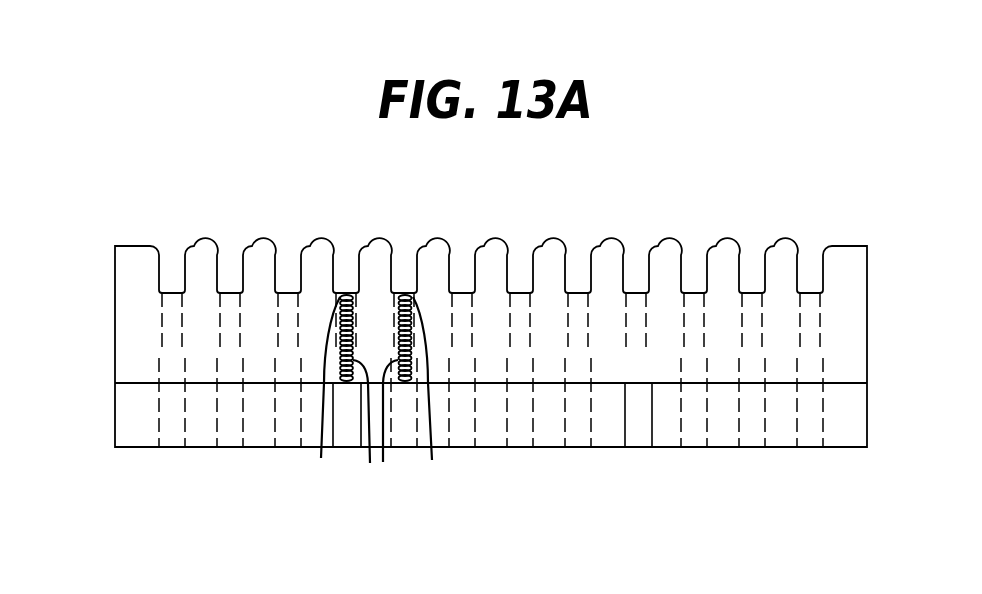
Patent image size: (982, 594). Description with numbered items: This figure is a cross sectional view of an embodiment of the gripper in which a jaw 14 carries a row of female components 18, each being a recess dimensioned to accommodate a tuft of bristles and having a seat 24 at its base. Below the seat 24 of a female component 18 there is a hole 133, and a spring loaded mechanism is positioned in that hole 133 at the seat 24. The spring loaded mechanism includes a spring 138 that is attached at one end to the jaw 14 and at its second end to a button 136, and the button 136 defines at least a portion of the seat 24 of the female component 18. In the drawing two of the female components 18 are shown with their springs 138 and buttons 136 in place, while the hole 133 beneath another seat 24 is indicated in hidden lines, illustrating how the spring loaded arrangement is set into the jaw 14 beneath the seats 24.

The female component 18 is at (181, 232).
The seat 24 is at (282, 293).
The jaw 14 is at (126, 422).
The button 136 is at (375, 392).
The spring 138 is at (375, 428).
The hole 133 is at (583, 318).